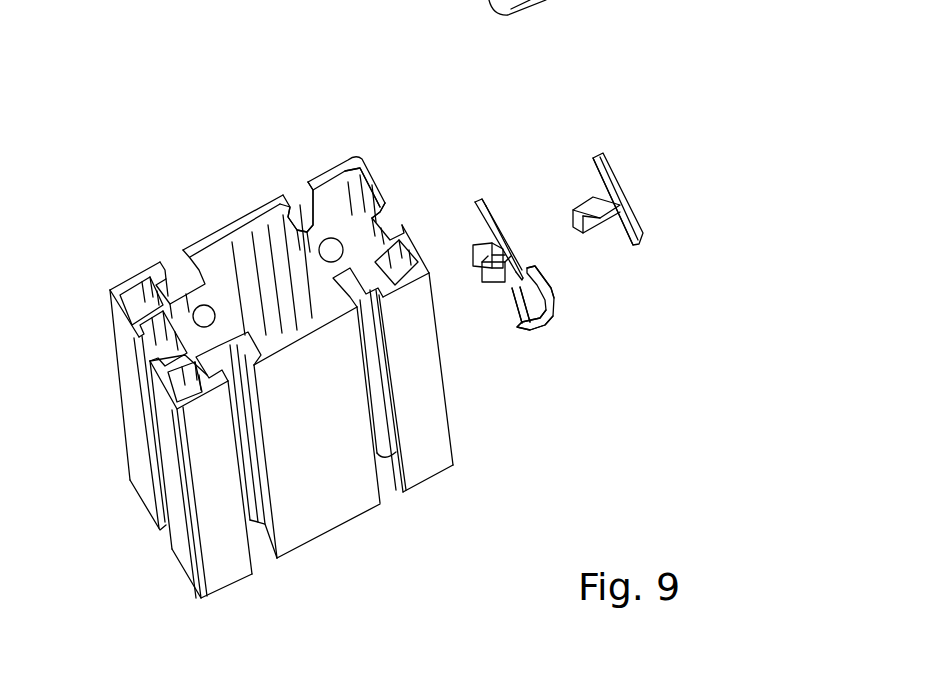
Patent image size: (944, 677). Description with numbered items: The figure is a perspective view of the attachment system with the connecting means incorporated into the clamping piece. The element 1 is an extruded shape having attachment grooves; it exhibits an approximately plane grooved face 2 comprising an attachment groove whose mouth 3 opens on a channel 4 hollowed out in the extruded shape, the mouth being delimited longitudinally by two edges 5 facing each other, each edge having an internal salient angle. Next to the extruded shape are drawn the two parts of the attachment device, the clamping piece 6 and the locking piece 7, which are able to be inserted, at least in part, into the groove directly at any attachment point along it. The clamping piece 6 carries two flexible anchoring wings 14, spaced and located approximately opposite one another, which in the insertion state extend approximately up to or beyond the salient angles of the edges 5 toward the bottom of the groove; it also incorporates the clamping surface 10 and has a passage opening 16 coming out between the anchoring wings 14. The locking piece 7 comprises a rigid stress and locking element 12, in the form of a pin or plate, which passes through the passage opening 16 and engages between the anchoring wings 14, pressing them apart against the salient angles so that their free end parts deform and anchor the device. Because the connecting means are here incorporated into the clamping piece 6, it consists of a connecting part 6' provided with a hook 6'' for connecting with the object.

The element having attachment groove(s) 1 is at (198, 196).
The grooved face 2 is at (376, 168).
The mouth 3 is at (394, 205).
The channel 4 is at (367, 232).
The edge 5 is at (362, 195).
The clamping piece 6 is at (500, 171).
The connecting part 6' is at (577, 354).
The hook 6'' is at (607, 288).
The locking piece 7 is at (642, 174).
The clamping surface 10 is at (512, 290).
The stress and locking element 12 is at (592, 210).
The anchoring wing 14 is at (476, 241).
The passage opening 16 is at (492, 262).